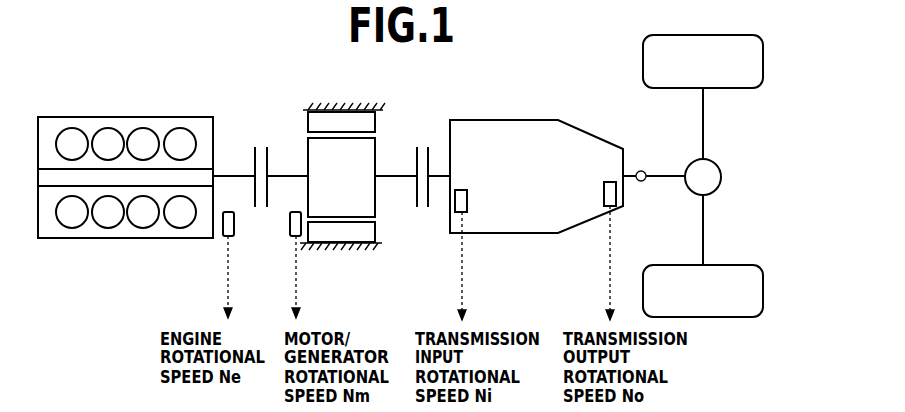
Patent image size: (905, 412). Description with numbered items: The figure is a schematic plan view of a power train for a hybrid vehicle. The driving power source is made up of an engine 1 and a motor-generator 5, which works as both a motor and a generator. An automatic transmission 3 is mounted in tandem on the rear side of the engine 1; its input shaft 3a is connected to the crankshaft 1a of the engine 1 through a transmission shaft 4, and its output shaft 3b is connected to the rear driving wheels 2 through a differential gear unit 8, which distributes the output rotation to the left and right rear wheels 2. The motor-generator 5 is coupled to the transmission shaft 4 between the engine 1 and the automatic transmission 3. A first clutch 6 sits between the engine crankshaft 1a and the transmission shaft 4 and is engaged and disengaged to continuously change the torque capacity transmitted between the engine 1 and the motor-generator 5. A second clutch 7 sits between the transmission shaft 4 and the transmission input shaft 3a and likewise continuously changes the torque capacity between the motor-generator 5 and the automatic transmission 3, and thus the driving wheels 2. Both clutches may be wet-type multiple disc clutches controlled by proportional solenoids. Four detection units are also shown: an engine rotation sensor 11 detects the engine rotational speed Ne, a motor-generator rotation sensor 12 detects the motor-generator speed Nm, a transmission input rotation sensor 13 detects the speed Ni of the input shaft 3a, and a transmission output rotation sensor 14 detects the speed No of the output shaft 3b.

The engine 1 is at (97, 117).
The crankshaft 1a is at (232, 176).
The rear wheels 2 is at (640, 63).
The automatic transmission 3 is at (516, 118).
The input shaft 3a is at (439, 173).
The output shaft 3b is at (627, 172).
The transmission shaft 4 is at (392, 176).
The motor-generator 5 is at (327, 106).
The first clutch 6 is at (259, 147).
The second clutch 7 is at (418, 209).
The differential gear unit 8 is at (722, 175).
The engine rotation sensor 11 is at (222, 238).
The motor-generator rotation sensor 12 is at (292, 238).
The transmission input rotation sensor 13 is at (467, 200).
The transmission output rotation sensor 14 is at (604, 192).